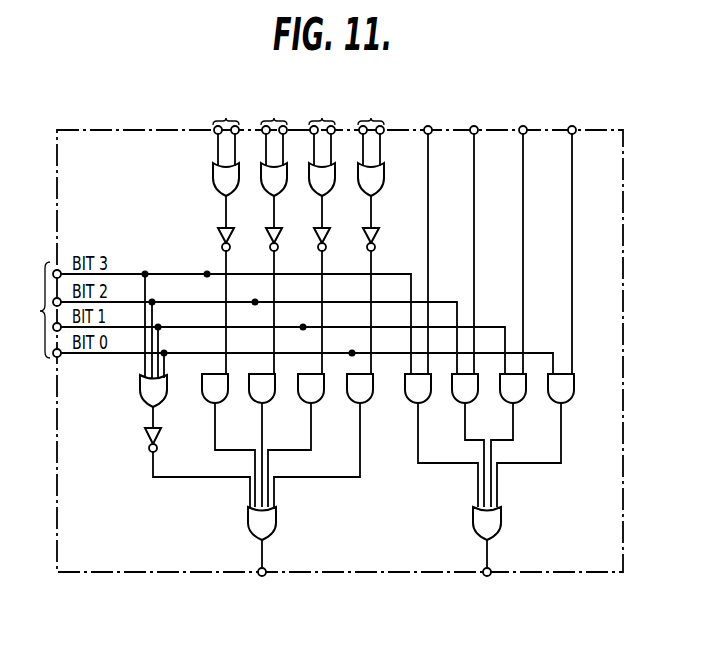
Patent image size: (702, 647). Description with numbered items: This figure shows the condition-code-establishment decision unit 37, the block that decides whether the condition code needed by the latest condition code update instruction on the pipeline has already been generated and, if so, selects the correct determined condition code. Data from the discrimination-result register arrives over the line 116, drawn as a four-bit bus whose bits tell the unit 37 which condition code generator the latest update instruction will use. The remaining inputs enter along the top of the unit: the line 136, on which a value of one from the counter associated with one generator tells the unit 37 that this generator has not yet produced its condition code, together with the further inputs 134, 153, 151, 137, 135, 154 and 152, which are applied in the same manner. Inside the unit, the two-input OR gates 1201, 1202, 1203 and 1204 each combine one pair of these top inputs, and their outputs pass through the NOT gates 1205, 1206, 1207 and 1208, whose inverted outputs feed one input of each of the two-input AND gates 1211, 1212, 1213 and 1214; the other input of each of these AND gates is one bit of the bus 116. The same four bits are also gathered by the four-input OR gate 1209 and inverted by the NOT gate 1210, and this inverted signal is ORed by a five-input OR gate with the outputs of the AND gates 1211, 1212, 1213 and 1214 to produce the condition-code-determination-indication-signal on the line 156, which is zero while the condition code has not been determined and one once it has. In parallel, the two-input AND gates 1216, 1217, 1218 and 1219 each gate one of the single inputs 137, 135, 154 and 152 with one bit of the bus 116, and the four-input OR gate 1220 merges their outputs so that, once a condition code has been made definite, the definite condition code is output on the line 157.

The condition-code-establishment decision unit 37 is at (623, 343).
The line 116 is at (37, 310).
The line 136 is at (226, 114).
The input signal pair 134 is at (274, 114).
The input signal pair 153 is at (322, 114).
The input signal pair 151 is at (371, 114).
The input signal 137 is at (428, 126).
The input signal 135 is at (475, 126).
The input signal 154 is at (524, 126).
The input signal 152 is at (573, 126).
The 2-input OR gate 1201 is at (213, 188).
The 2-input OR gate 1202 is at (263, 186).
The 2-input OR gate 1203 is at (331, 188).
The 2-input OR gate 1204 is at (382, 192).
The NOT gate 1205 is at (217, 231).
The NOT gate 1206 is at (270, 247).
The NOT gate 1207 is at (316, 233).
The NOT gate 1208 is at (376, 245).
The 4-input OR gate 1209 is at (143, 390).
The NOT gate 1210 is at (148, 445).
The 2-input AND gate 1211 is at (221, 402).
The 2-input AND gate 1212 is at (270, 401).
The 2-input AND gate 1213 is at (319, 401).
The 2-input AND gate 1214 is at (368, 402).
The 2-input AND gate 1216 is at (422, 402).
The 2-input AND gate 1217 is at (478, 393).
The 2-input AND gate 1218 is at (527, 394).
The 2-input AND gate 1219 is at (569, 404).
The 4-input OR gate 1220 is at (500, 520).
The line 156 is at (259, 578).
The line 157 is at (489, 578).